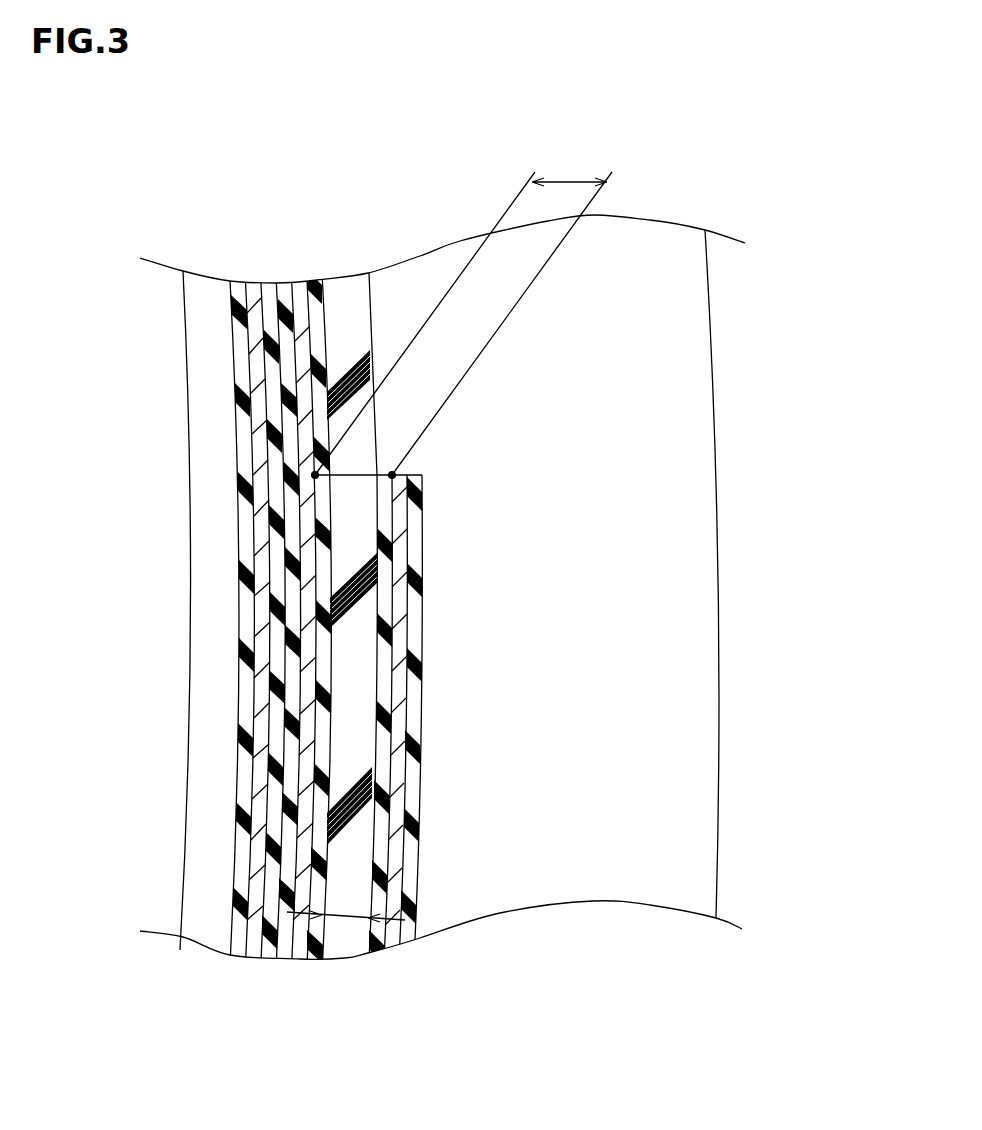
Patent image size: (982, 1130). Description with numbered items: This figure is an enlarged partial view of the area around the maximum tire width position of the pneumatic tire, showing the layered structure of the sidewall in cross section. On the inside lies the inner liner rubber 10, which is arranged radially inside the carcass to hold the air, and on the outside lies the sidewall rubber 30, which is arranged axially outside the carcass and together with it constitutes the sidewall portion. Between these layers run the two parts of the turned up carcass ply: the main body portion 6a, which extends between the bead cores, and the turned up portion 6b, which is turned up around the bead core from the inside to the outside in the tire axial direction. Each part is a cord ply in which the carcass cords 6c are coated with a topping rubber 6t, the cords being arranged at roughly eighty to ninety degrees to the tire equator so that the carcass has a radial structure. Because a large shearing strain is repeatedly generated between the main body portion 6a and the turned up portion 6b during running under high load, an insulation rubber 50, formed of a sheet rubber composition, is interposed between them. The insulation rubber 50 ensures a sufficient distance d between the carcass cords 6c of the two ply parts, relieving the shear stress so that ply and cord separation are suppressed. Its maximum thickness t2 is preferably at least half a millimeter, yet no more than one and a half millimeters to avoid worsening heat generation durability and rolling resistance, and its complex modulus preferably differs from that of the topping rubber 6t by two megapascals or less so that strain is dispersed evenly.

The inner liner rubber 10 is at (212, 487).
The sidewall rubber 30 is at (637, 403).
The insulation rubber 50 is at (350, 343).
The main body portion 6a is at (237, 292).
The turned up portion 6b is at (425, 622).
The carcass cord 6c is at (400, 684).
The topping rubber 6t is at (420, 778).
The distance d is at (461, 312).
The maximum thickness t2 is at (340, 916).